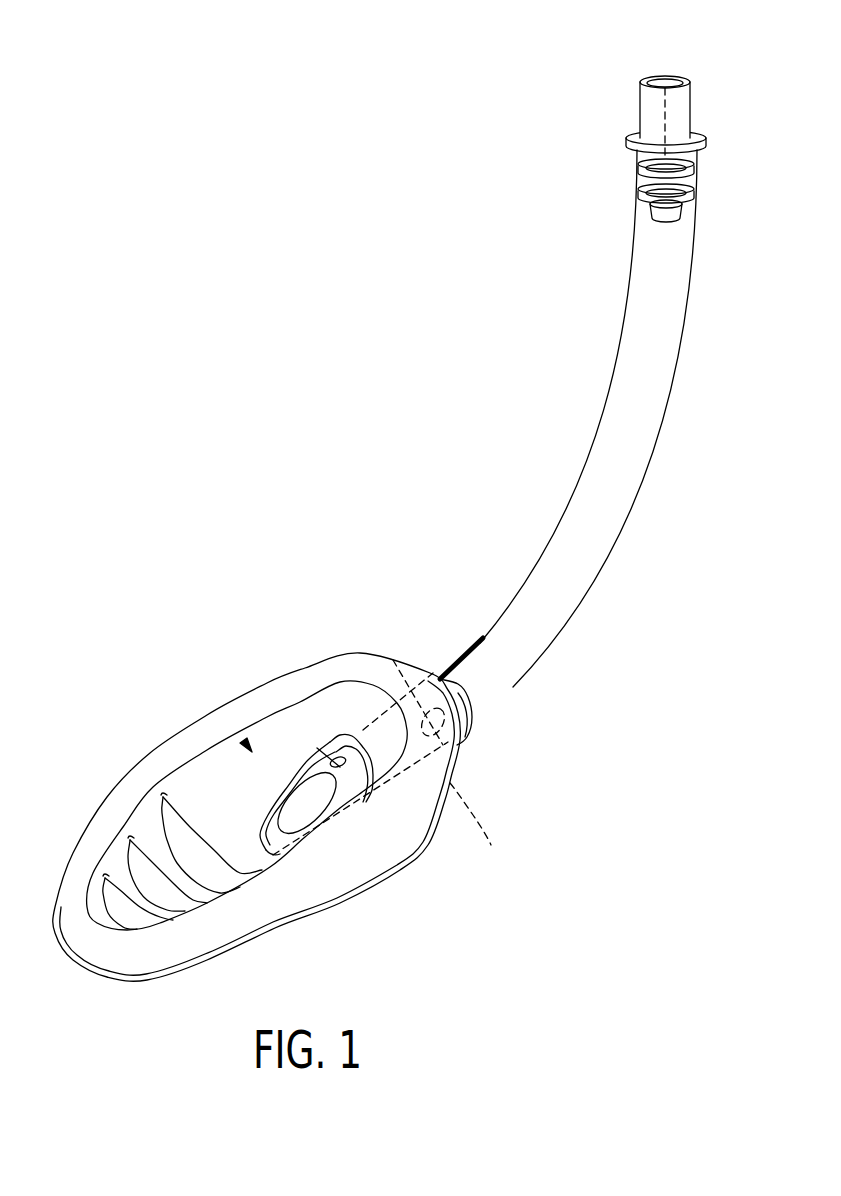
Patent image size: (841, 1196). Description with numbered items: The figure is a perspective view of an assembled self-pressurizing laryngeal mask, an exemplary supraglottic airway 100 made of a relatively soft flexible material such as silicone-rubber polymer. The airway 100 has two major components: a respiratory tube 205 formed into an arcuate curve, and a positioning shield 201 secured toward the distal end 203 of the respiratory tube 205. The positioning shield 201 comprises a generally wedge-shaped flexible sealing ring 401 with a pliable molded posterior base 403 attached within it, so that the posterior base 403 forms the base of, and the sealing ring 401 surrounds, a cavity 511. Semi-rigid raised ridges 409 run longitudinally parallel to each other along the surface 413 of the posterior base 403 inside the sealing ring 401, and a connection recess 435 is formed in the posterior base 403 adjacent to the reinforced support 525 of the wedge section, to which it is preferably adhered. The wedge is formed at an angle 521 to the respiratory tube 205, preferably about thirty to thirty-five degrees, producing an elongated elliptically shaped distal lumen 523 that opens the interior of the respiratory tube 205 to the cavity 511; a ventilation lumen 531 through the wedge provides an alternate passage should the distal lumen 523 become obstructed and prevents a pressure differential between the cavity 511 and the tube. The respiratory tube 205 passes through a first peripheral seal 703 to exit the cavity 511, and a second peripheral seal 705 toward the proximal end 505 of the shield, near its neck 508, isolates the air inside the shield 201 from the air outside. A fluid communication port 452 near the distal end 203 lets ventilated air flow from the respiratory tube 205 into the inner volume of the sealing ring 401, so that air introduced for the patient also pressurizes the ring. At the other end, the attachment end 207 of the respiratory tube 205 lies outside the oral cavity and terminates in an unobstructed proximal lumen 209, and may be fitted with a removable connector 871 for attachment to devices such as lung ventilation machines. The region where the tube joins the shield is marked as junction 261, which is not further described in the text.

The supraglottic airway 100 is at (660, 566).
The positioning shield 201 is at (367, 877).
The distal end of the respiratory tube 203 is at (437, 776).
The respiratory tube 205 is at (664, 395).
The proximal end of the respiratory tube 207 is at (704, 146).
The proximal lumen 209 is at (663, 80).
The tube junction 261 is at (479, 643).
The sealing ring 401 is at (306, 891).
The posterior base 403 is at (213, 750).
The raised ridges 409 is at (155, 790).
The surface of the posterior base 413 is at (246, 847).
The connection recess 435 is at (270, 803).
The fluid communication port 452 is at (391, 656).
The proximal end of the positioning shield 505 is at (460, 692).
The neck 508 is at (461, 720).
The cavity 511 is at (246, 744).
The angle 521 is at (294, 784).
The distal lumen 523 is at (312, 798).
The reinforced support 525 is at (258, 833).
The ventilation lumen 531 is at (336, 760).
The first peripheral seal 703 is at (407, 800).
The second peripheral seal 705 is at (465, 727).
The connector 871 is at (690, 97).